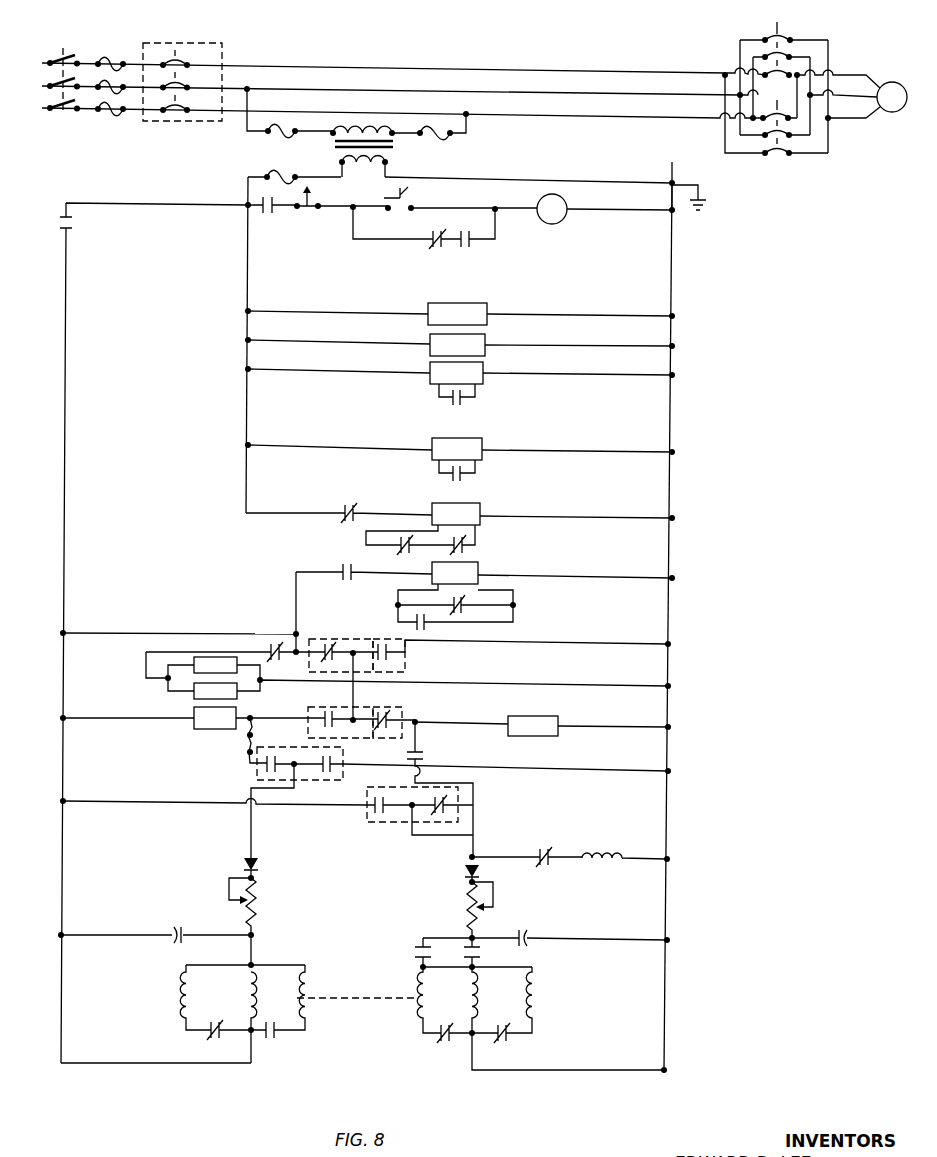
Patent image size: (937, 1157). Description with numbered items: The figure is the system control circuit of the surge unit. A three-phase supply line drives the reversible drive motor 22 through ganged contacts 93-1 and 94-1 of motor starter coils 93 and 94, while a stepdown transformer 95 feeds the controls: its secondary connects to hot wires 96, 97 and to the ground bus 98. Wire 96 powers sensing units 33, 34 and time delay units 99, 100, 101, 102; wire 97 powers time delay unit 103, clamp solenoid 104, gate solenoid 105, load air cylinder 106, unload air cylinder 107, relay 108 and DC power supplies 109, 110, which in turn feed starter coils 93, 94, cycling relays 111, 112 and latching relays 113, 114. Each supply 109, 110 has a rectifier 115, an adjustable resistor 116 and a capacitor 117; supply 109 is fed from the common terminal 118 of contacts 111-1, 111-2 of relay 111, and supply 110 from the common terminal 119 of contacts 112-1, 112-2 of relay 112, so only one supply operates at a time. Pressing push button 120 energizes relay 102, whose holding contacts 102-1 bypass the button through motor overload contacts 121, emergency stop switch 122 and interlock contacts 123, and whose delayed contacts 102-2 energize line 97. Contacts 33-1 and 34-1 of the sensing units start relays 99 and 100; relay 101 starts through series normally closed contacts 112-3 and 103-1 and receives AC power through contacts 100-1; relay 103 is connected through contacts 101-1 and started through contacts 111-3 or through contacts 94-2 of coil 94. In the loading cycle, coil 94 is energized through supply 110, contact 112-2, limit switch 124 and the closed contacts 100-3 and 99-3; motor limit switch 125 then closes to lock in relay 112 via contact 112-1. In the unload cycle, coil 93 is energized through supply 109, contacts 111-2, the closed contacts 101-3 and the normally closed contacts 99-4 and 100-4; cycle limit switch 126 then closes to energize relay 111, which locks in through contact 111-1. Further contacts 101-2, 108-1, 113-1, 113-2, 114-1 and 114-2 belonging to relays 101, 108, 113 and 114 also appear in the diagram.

The reversible drive motor 22 is at (891, 82).
The forward contactor contacts 93-1 is at (757, 35).
The contacts of starter coil 94 94-1 is at (782, 168).
The stepdown transformer 95 is at (390, 163).
The time relay 102 is at (566, 202).
The push button 120 is at (407, 193).
The motor overload contacts 121 is at (430, 235).
The holding contacts 102-1 is at (470, 247).
The normally open contacts of relay 102 102-2 is at (70, 232).
The interlock contacts 123 is at (263, 210).
The emergency stop switch 122 is at (303, 218).
The hot wire 97 is at (66, 320).
The hot wire 96 is at (246, 393).
The main ground line or bus 98 is at (676, 412).
The sensing unit 33 is at (460, 314).
The sensing unit 34 is at (460, 345).
The time delay relay 99 is at (460, 373).
The normally open contacts of sensing unit 33 33-1 is at (465, 400).
The time delay relay 100 is at (460, 449).
The normally open contacts of sensing unit 34 34-1 is at (468, 476).
The normally closed contacts of relay 100 100-1 is at (345, 508).
The time delay relay 101 is at (553, 514).
The normally open contacts of relay 101 101-1 is at (345, 567).
The contacts of cycling relay 112 112-3 is at (419, 560).
The contacts of relay 103 103-1 is at (468, 550).
The time delay relay 103 is at (553, 573).
The normally closed contacts of cycling relay 111 111-3 is at (465, 609).
The normally open contacts of starter coil 94 94-2 is at (426, 630).
The clamp solenoid 104 is at (213, 657).
The contact of relay 101 101-2 is at (272, 647).
The normally closed contacts of relay 99 99-4 is at (343, 643).
The normally open contact of relay 99 99-3 is at (395, 663).
The gate solenoid 105 is at (200, 693).
The normally open contact of relay 100 100-3 is at (322, 700).
The normally closed contacts of relay 100 100-4 is at (403, 714).
The load air cylinder 106 is at (156, 718).
The unload air cylinder 107 is at (543, 725).
The limit switch 124 is at (245, 746).
The normally closed contact of relay 112 112-2 is at (266, 757).
The normally open contact of relay 112 112-1 is at (340, 767).
The normally open contacts of relay 101 101-3 is at (412, 749).
The common terminal 119 is at (295, 768).
The normally open contact of cycling relay 111 111-1 is at (375, 808).
The common terminal 118 is at (412, 812).
The normally closed contacts of cycling relay 111 111-2 is at (450, 812).
The contact of relay 113 113-1 is at (540, 850).
The relay 108 is at (592, 853).
The rectifier 115 is at (245, 862).
The DC power supply 110 is at (304, 874).
The DC power supply 109 is at (438, 897).
The adjustable resistor 116 is at (255, 906).
The capacitor 117 is at (185, 927).
The contact of relay 114 114-2 is at (418, 947).
The contact of relay 108 108-1 is at (481, 956).
The cycling relay 112 is at (183, 998).
The motor starter coil 94 is at (230, 1001).
The latching relay 114 is at (310, 980).
The latching relay 113 is at (415, 990).
The motor starter coil 93 is at (475, 1009).
The cycling relay 111 is at (537, 1000).
The motor limit switch 125 is at (212, 1038).
The contact of relay 113 113-2 is at (280, 1038).
The contact of relay 114 114-1 is at (432, 1046).
The cycle limit switch 126 is at (512, 1040).